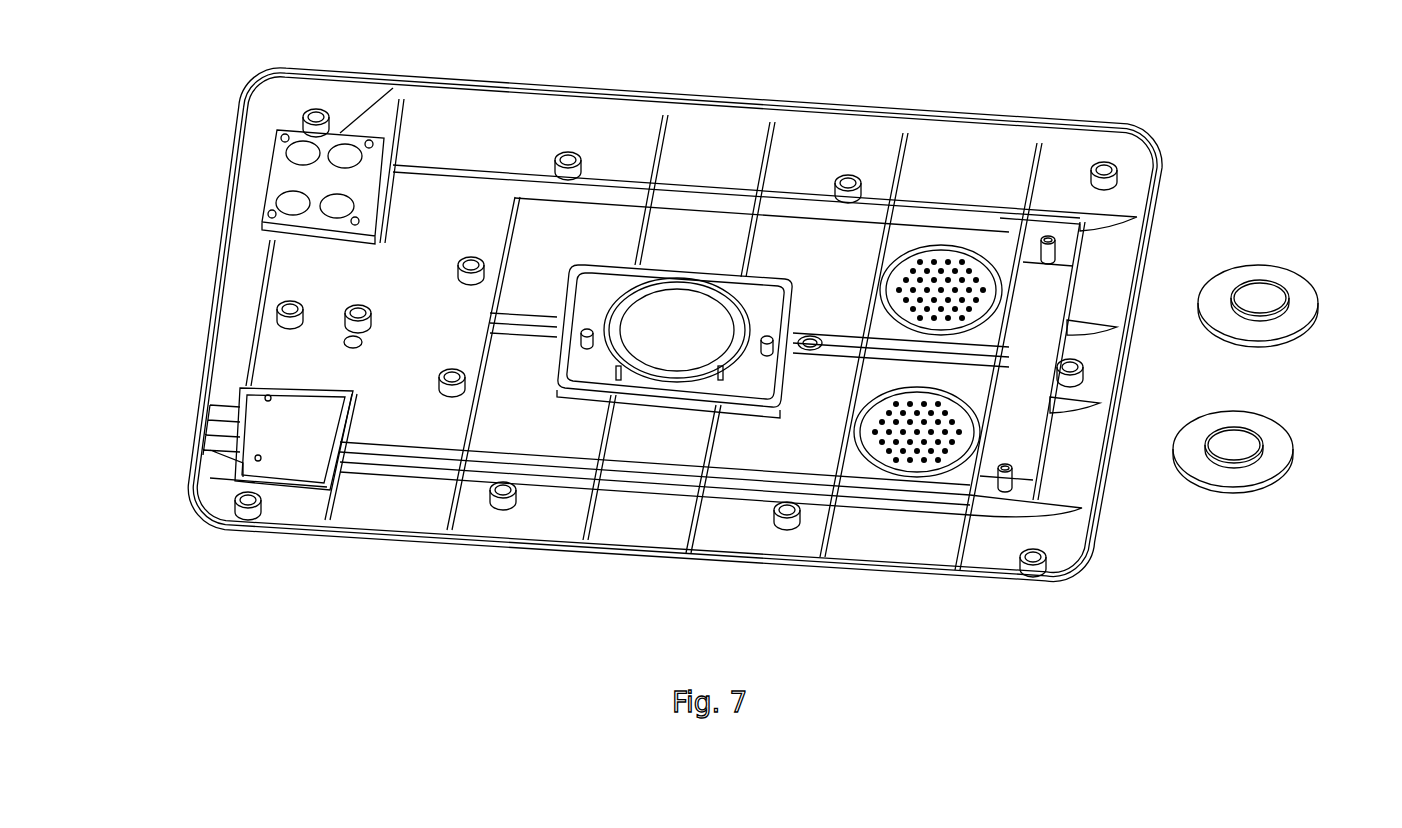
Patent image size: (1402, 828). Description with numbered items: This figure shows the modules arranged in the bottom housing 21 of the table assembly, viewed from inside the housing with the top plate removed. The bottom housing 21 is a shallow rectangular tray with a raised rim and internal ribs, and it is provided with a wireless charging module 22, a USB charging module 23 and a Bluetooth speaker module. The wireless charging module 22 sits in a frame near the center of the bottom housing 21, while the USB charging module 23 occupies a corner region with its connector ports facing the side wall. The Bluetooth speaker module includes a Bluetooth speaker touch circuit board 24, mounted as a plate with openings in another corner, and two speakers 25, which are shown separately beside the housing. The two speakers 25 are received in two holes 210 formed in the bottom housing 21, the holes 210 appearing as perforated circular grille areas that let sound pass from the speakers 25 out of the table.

The bottom housing 21 is at (723, 130).
The wireless charging module 22 is at (650, 345).
The USB charging module 23 is at (220, 432).
The Bluetooth speaker touch circuit board 24 is at (292, 176).
The speaker 25 is at (1337, 456).
The hole 210 is at (902, 480).